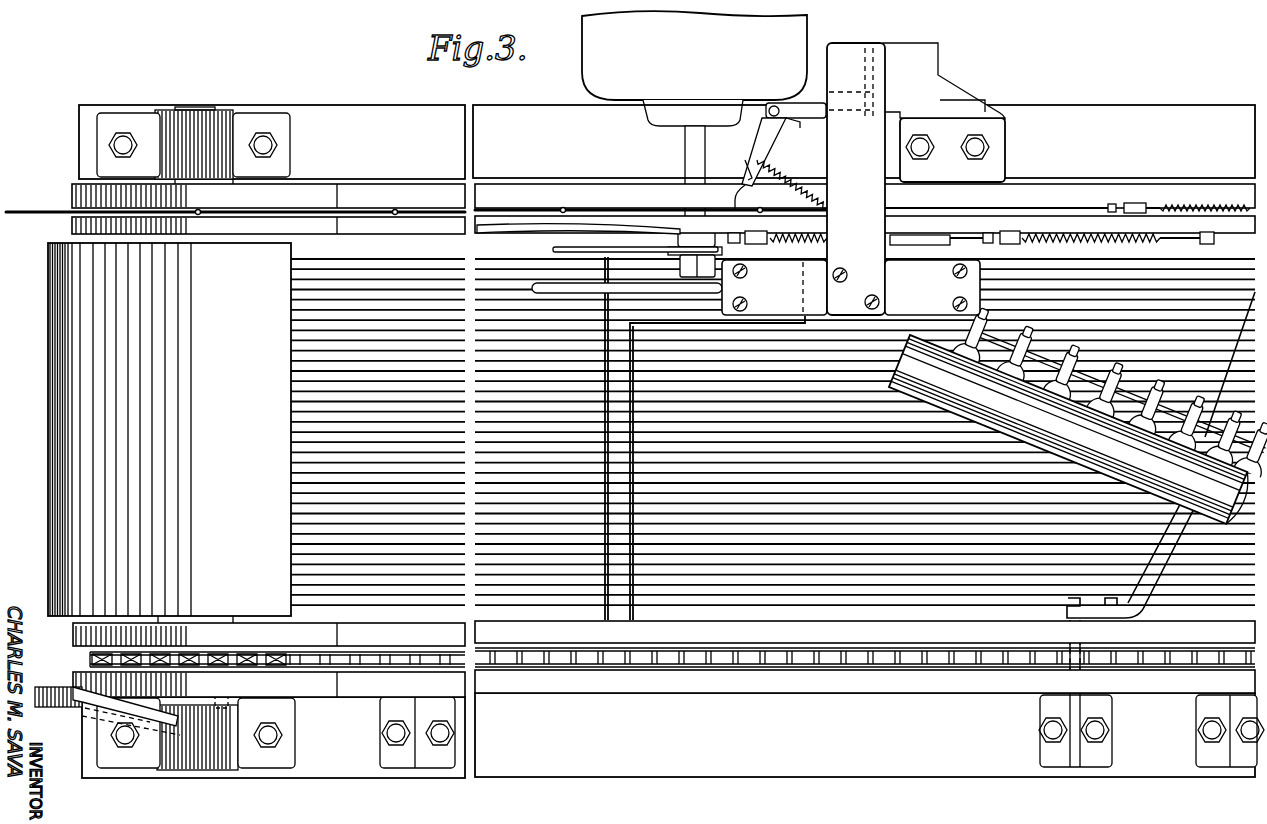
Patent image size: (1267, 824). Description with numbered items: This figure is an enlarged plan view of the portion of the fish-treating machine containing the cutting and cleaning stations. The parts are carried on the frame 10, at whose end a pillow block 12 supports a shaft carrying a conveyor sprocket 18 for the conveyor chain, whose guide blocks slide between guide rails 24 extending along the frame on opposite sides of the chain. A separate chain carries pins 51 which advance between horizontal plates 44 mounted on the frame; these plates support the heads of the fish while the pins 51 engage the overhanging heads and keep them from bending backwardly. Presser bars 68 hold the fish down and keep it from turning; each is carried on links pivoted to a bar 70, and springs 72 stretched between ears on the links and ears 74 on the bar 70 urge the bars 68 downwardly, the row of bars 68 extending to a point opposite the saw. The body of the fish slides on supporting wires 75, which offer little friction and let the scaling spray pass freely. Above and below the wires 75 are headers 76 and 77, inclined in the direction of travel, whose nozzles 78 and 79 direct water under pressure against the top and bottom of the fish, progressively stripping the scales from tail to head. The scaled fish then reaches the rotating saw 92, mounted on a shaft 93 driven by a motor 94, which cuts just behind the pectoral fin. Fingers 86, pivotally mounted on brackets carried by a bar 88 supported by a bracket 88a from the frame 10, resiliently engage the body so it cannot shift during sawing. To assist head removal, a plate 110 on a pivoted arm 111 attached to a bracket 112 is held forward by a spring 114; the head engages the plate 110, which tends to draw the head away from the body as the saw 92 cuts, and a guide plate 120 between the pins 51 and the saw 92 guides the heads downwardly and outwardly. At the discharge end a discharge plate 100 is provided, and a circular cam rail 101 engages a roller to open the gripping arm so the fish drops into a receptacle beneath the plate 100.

The frame 10 is at (360, 118).
The pillow block 12 is at (216, 112).
The conveyor sprocket 18 is at (90, 659).
The guide rails 24 is at (762, 638).
The horizontal plates 44 is at (372, 220).
The pins 51 is at (38, 214).
The presser bars 68 is at (918, 246).
The bar 70 is at (1056, 218).
The springs 72 is at (1094, 243).
The ears 74 is at (1138, 200).
The supporting wires 75 is at (430, 269).
The header 76 is at (1033, 415).
The header 77 is at (1061, 392).
The nozzles 78 is at (1069, 426).
The nozzles 79 is at (1106, 387).
The fingers 86 is at (720, 289).
The bar 88 is at (774, 287).
The bracket 88a is at (856, 179).
The rotating saw 92 is at (556, 250).
The shaft 93 is at (685, 152).
The motor 94 is at (809, 20).
The discharge plate 100 is at (64, 415).
The circular cam rail 101 is at (70, 703).
The plate 110 is at (750, 163).
The pivoted arm 111 is at (760, 125).
The bracket 112 is at (812, 100).
The spring 114 is at (775, 170).
The guide plate 120 is at (600, 226).